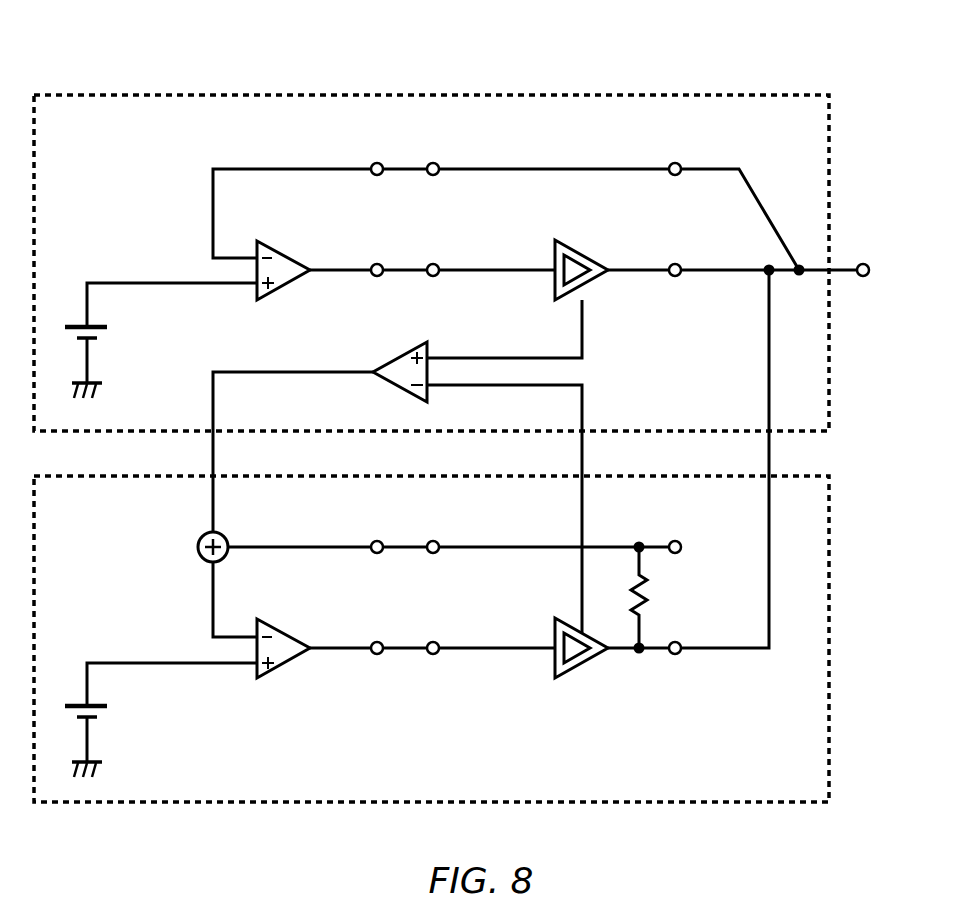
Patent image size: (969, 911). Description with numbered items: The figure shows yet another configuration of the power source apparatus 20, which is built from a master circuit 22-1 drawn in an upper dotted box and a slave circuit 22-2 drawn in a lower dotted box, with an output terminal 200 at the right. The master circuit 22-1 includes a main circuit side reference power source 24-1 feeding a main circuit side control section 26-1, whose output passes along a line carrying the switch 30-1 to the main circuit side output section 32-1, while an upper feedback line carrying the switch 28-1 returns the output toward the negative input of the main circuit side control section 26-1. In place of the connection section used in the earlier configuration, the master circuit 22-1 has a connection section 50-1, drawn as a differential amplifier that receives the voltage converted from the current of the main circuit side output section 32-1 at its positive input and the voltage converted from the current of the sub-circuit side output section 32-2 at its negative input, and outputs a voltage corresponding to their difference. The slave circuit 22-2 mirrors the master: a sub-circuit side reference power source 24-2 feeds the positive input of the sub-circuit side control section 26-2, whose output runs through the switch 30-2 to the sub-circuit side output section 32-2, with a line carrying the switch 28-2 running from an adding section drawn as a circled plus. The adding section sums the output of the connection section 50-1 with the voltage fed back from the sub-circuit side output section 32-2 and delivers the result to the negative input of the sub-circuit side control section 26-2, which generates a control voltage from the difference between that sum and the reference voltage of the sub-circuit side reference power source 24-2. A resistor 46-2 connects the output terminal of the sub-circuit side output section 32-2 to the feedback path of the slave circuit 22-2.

The power source apparatus 20 is at (822, 37).
The master circuit 22-1 is at (829, 367).
The slave circuit 22-2 is at (829, 742).
The main circuit side reference power source 24-1 is at (100, 323).
The sub-circuit side reference power source 24-2 is at (100, 702).
The main circuit side control section 26-1 is at (308, 231).
The sub-circuit side control section 26-2 is at (308, 609).
The switch 28-1 is at (457, 140).
The switch 28-2 is at (457, 518).
The switch 30-1 is at (436, 264).
The switch 30-2 is at (457, 619).
The main circuit side output section 32-1 is at (608, 231).
The sub-circuit side output section 32-2 is at (583, 664).
The resistor 46-2 is at (648, 598).
The connection section 50-1 is at (401, 349).
The output terminal 200 is at (891, 270).